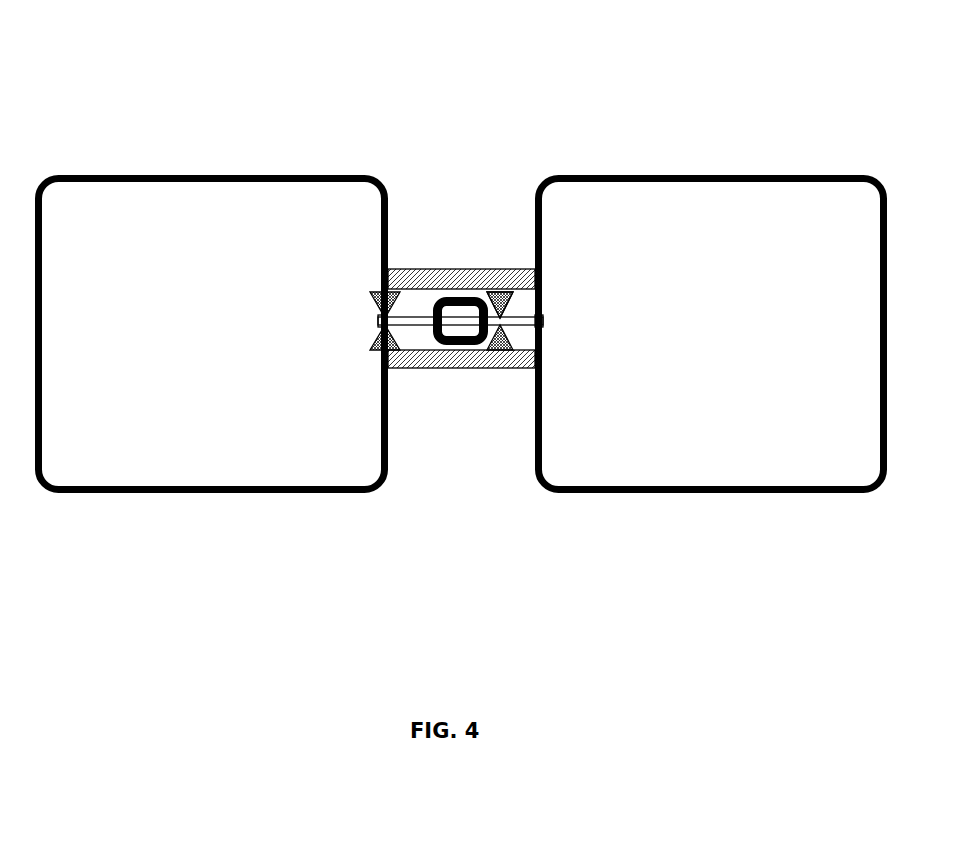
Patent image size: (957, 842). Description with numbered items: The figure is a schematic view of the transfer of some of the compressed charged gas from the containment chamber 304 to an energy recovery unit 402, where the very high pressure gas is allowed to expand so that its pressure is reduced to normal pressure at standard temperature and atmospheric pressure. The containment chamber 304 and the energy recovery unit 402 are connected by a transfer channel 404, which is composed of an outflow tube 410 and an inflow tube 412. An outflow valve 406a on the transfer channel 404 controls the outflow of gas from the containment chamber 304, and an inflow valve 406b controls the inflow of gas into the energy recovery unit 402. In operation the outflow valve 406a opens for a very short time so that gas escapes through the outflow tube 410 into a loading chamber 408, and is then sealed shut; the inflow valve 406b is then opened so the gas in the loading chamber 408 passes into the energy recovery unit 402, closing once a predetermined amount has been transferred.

The containment chamber 304 is at (212, 334).
The energy recovery unit 402 is at (711, 334).
The transfer channel 404 is at (462, 269).
The outflow valve 406a is at (390, 368).
The inflow valve 406b is at (503, 368).
The loading chamber 408 is at (463, 368).
The outflow tube 410 is at (410, 316).
The inflow tube 412 is at (519, 295).